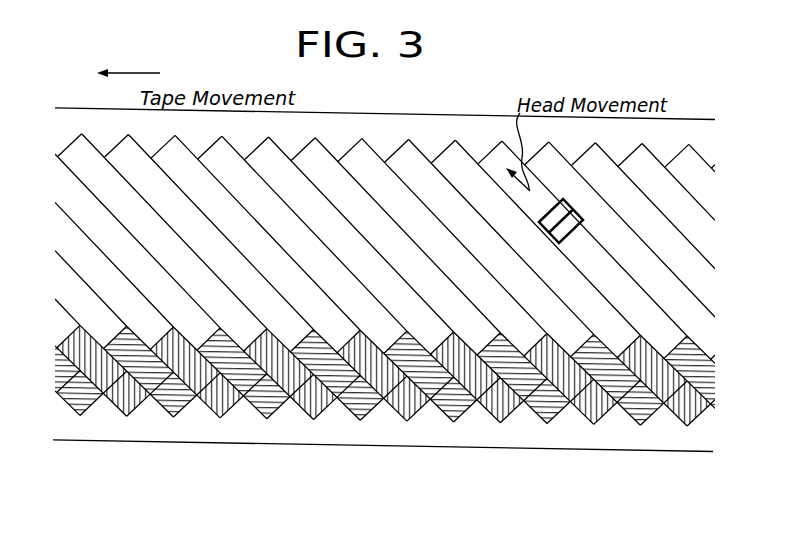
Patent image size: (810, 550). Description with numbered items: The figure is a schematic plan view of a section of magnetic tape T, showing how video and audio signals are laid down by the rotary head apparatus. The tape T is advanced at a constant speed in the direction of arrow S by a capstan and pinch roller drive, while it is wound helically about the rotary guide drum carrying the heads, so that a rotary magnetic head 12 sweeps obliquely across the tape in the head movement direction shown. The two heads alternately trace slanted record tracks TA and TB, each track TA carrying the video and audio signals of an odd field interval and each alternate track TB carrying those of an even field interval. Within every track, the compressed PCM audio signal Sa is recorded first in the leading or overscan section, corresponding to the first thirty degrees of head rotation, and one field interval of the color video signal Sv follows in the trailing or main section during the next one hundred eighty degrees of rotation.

The magnetic tape T is at (375, 118).
The arrow indicating tape advance direction S is at (128, 60).
The rotary magnetic head 12 is at (582, 234).
The color video signal Sv is at (198, 330).
The compressed PCM audio signal Sa is at (260, 392).
The record track TA is at (327, 408).
The record track TB is at (368, 402).